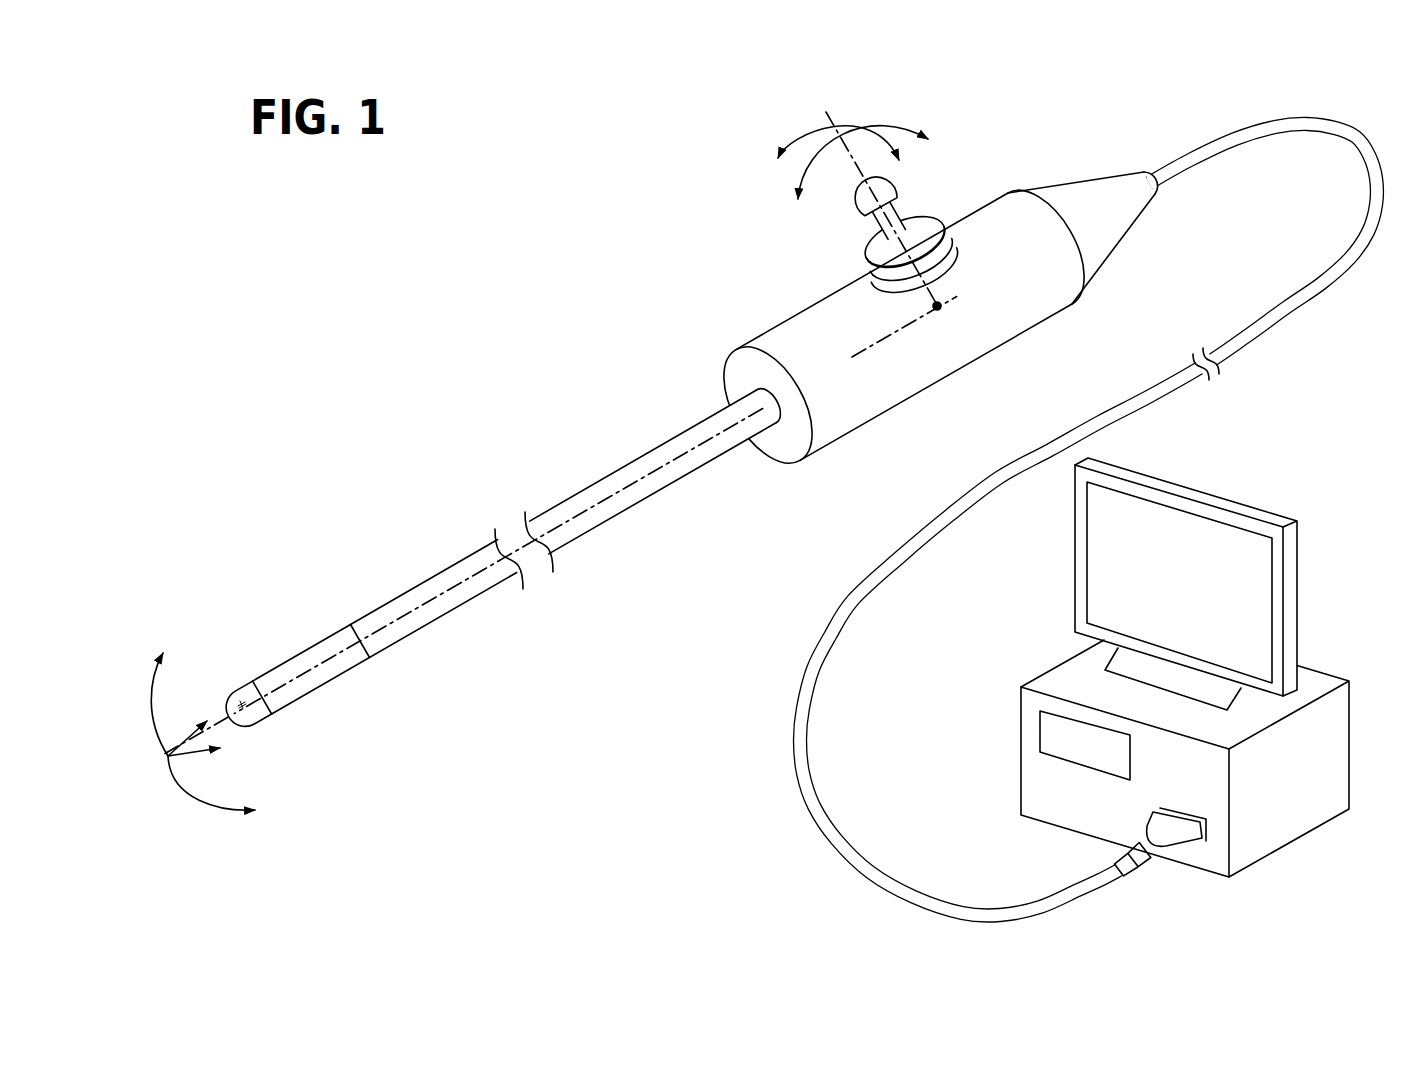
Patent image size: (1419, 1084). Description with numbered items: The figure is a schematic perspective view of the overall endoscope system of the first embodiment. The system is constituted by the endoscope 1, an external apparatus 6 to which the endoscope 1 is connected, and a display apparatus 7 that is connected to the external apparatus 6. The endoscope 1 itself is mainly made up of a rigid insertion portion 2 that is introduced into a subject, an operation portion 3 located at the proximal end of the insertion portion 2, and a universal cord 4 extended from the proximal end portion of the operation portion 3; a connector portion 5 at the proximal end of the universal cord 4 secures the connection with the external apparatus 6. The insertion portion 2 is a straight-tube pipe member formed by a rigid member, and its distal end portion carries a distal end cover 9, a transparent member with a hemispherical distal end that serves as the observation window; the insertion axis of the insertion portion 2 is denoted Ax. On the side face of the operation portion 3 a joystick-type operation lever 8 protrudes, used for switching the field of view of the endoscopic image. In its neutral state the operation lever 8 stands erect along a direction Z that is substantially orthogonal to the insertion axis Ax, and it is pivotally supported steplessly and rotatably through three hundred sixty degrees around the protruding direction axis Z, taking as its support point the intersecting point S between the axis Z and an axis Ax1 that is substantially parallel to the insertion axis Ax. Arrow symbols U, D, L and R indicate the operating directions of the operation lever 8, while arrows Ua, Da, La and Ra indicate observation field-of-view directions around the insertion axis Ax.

The endoscope 1 is at (528, 262).
The insertion portion 2 is at (377, 608).
The operation portion 3 is at (787, 321).
The universal cord 4 is at (1247, 347).
The connector portion 5 is at (1163, 851).
The external apparatus 6 is at (1307, 832).
The display apparatus 7 is at (1299, 602).
The operation lever 8 is at (862, 207).
The distal end cover 9 is at (264, 721).
The insertion axis Ax is at (175, 756).
The axis substantially parallel to the insertion axis Ax1 is at (873, 345).
The intersecting point S is at (941, 307).
The protruding direction axis Z is at (837, 114).